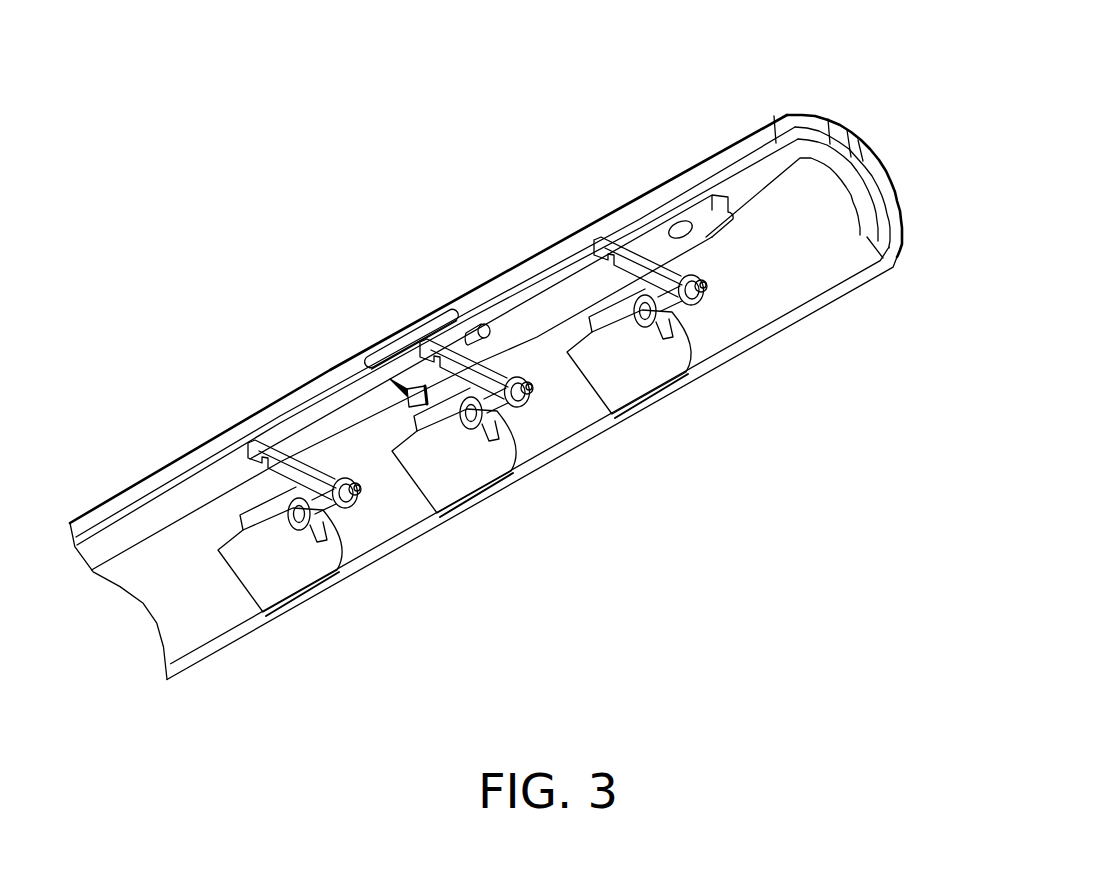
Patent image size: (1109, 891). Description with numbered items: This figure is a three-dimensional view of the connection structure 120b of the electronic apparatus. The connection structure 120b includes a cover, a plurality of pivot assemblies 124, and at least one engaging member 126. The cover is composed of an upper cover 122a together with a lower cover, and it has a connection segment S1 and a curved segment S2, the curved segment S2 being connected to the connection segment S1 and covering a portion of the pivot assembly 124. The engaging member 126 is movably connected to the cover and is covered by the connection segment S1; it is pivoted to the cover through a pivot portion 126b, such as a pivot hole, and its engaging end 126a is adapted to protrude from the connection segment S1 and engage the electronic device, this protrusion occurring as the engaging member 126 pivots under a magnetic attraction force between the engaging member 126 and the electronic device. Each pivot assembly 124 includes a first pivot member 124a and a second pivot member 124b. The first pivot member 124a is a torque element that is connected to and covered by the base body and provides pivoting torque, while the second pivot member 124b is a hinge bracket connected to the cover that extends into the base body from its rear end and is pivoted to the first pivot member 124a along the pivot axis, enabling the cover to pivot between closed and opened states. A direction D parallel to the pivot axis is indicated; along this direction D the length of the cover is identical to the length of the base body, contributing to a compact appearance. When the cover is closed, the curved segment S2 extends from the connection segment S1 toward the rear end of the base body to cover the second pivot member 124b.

The connection structure 120b is at (526, 340).
The upper cover 122a is at (820, 248).
The pivot assembly 124 is at (360, 291).
The first pivot member 124a is at (253, 440).
The second pivot member 124b is at (333, 548).
The engaging member 126 is at (469, 336).
The engaging end 126a is at (473, 342).
The pivot portion 126b is at (687, 245).
The connection segment S1 is at (805, 92).
The curved segment S2 is at (915, 208).
The direction D is at (198, 375).